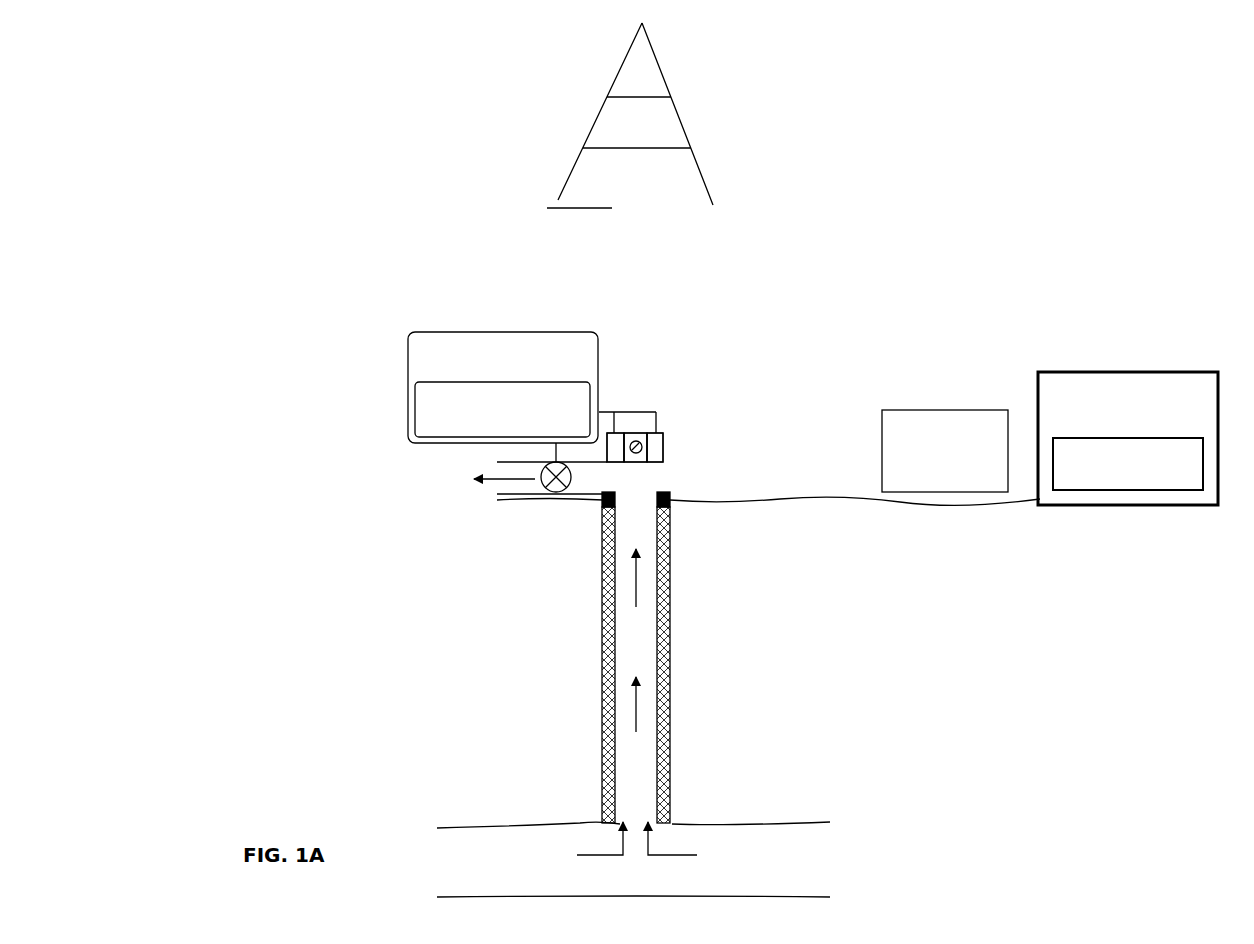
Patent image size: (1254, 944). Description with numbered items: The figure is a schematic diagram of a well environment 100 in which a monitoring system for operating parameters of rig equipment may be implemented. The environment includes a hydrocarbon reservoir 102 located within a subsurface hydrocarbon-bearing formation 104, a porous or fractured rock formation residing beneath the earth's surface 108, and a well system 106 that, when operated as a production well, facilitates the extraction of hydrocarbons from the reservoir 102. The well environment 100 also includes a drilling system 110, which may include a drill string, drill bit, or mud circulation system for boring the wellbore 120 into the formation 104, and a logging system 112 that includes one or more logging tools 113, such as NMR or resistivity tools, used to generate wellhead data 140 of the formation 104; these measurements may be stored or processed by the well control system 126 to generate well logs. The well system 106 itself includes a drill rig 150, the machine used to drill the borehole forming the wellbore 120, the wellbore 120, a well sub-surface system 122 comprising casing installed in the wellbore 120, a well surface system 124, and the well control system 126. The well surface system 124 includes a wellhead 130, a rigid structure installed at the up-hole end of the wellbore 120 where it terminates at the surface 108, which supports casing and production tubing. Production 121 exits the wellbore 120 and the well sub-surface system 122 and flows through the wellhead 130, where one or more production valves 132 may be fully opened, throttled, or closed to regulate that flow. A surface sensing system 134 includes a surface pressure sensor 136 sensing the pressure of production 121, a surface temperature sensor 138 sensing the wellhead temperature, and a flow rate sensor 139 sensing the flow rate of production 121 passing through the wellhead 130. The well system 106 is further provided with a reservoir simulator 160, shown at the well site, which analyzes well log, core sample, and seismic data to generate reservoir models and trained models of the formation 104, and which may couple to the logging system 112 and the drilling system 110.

The well environment 100 is at (834, 192).
The hydrocarbon reservoir 102 is at (633, 859).
The hydrocarbon-bearing formation 104 is at (790, 695).
The well system 106 is at (487, 282).
The surface 108 is at (743, 504).
The drilling system 110 is at (500, 168).
The logging system 112 is at (1128, 438).
The logging tools 113 is at (1128, 464).
The wellbore 120 is at (673, 630).
The production 121 is at (532, 476).
The well sub-surface system 122 is at (592, 669).
The well surface system 124 is at (843, 329).
The well control system 126 is at (446, 332).
The wellhead 130 is at (672, 491).
The production valve 132 is at (555, 493).
The surface sensing system 134 is at (668, 447).
The surface pressure sensor 136 is at (641, 433).
The surface temperature sensor 138 is at (660, 433).
The flow rate sensor 139 is at (613, 433).
The wellhead data 140 is at (453, 382).
The drill rig 150 is at (676, 68).
The reservoir simulator 160 is at (968, 410).